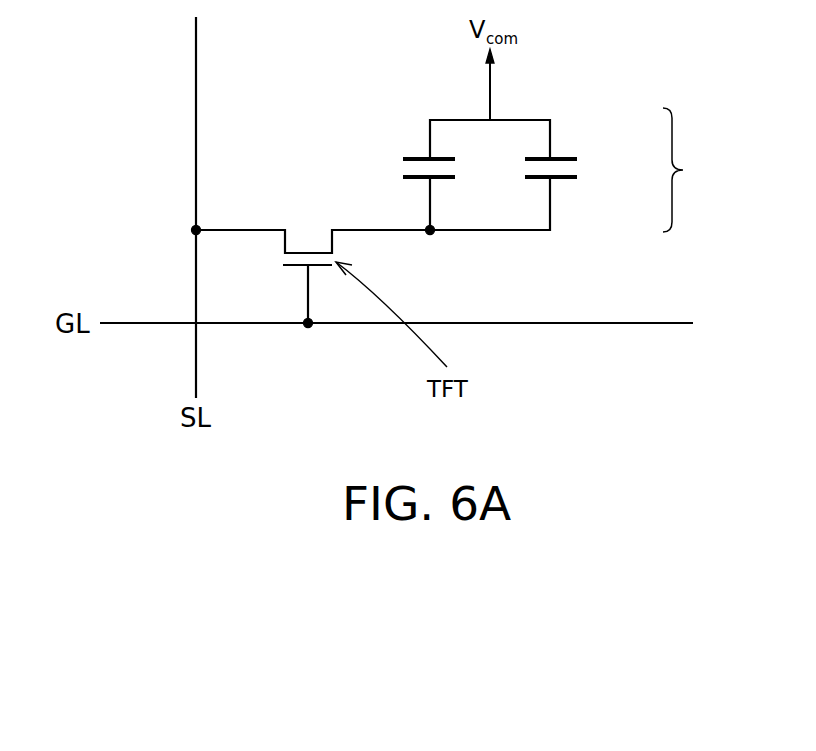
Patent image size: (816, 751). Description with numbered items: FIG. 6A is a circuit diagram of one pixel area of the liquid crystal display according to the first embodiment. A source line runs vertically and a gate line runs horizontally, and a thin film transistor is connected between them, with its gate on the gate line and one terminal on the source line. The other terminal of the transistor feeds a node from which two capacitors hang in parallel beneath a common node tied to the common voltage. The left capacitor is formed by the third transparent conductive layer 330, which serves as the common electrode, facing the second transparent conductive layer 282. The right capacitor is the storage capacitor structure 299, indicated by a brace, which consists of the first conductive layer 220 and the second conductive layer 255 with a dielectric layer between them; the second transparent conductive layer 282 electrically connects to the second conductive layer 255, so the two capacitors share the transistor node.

The third transparent conductive layer 330 is at (418, 155).
The second transparent conductive layer 282 is at (418, 180).
The first conductive layer 220 is at (563, 155).
The second conductive layer 255 is at (563, 180).
The storage capacitor structure 299 is at (699, 170).